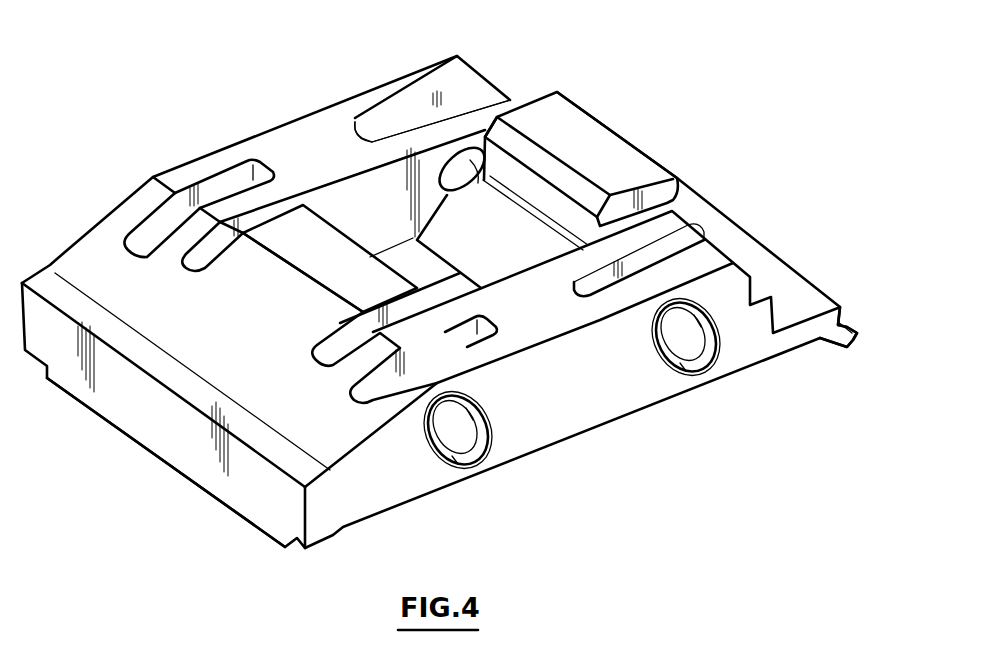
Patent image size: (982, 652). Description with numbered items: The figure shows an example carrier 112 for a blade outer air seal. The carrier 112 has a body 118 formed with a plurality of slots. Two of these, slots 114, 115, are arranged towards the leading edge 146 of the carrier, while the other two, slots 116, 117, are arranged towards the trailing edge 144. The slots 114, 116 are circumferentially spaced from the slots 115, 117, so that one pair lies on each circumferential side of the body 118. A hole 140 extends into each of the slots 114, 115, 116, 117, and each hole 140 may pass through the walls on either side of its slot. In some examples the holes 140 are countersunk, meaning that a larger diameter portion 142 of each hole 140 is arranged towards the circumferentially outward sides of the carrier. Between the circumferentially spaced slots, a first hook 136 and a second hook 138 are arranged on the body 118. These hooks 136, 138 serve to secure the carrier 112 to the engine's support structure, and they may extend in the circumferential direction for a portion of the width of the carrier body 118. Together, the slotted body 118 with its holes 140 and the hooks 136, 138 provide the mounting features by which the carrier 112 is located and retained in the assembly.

The carrier 112 is at (660, 62).
The slot 114 is at (217, 182).
The slot 115 is at (452, 338).
The slot 116 is at (410, 103).
The slot 117 is at (592, 282).
The body 118 is at (347, 193).
The first hook 136 is at (313, 233).
The second hook 138 is at (558, 110).
The hole 140 is at (476, 152).
The larger diameter portion 142 is at (706, 348).
The trailing edge 144 is at (855, 333).
The leading edge 146 is at (167, 465).